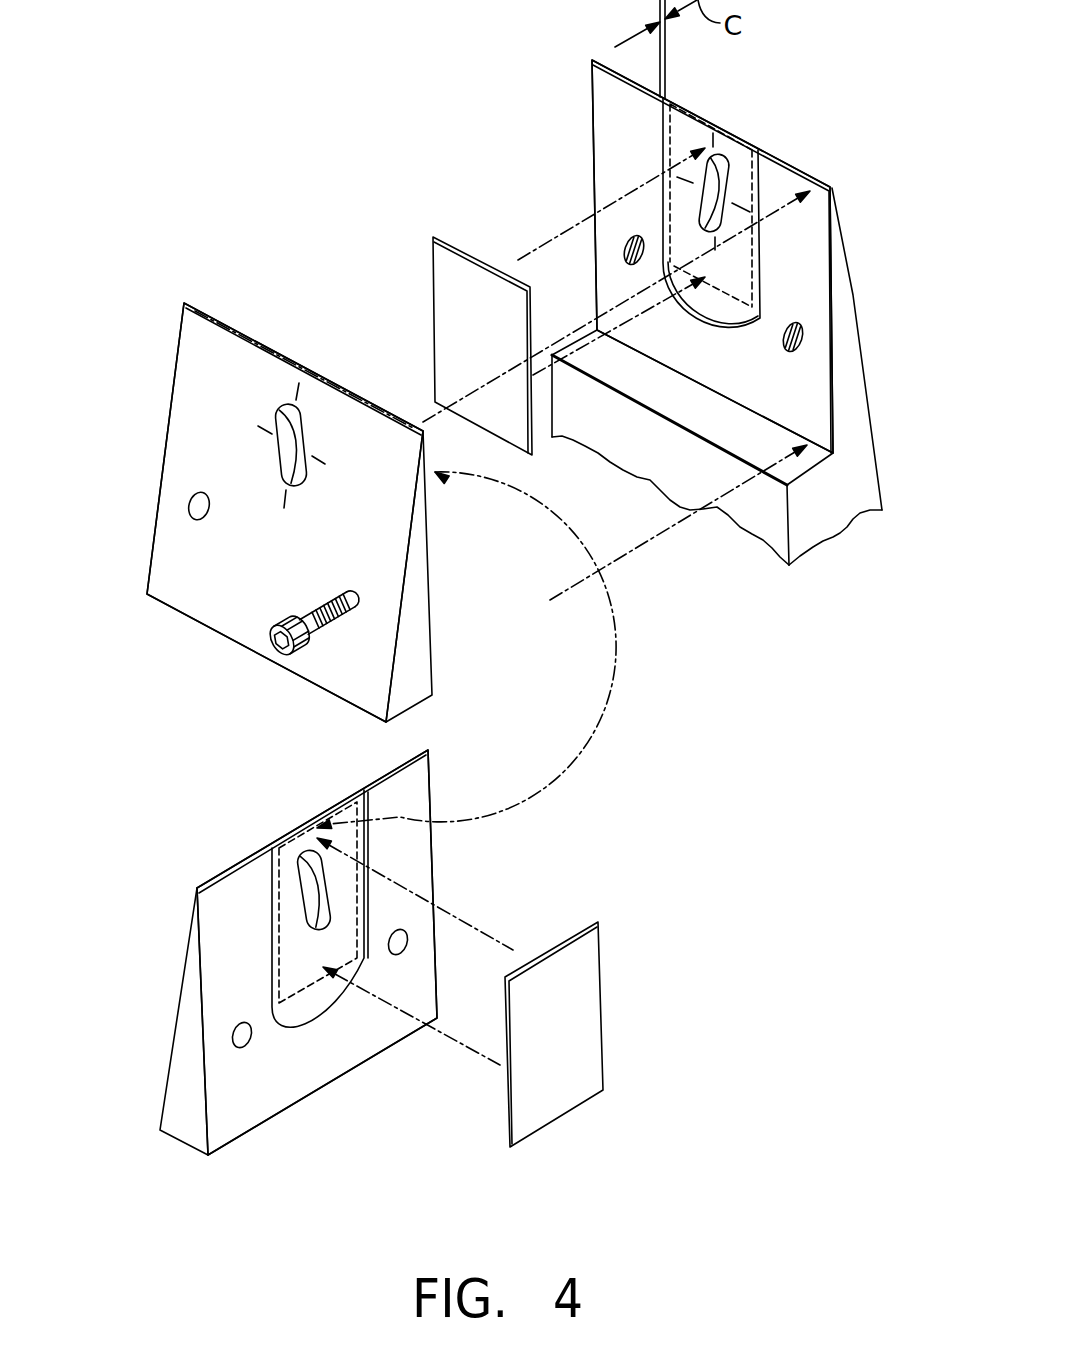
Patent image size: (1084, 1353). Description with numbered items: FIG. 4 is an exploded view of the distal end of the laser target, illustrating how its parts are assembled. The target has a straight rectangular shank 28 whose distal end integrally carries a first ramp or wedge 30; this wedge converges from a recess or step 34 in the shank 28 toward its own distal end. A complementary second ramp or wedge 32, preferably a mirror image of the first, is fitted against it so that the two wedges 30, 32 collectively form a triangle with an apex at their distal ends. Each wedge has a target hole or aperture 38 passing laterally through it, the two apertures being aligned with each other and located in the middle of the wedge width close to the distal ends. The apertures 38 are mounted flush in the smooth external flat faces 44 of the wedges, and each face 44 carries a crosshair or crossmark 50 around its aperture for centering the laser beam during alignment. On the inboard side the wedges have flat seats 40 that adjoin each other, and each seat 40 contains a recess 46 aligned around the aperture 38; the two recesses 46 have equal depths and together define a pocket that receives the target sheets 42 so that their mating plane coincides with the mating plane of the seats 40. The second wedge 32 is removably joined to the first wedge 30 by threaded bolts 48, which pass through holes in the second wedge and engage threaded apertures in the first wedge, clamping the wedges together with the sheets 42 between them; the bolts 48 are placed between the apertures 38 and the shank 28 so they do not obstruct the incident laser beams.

The shank 28 is at (825, 513).
The first ramp or wedge 30 is at (798, 170).
The second ramp or wedge 32 is at (228, 320).
The recess or step 34 is at (723, 430).
The target holes or apertures 38 is at (720, 177).
The inboard flat seats 40 is at (782, 299).
The target sheets 42 is at (432, 317).
The external flat faces 44 is at (342, 504).
The recess 46 is at (718, 268).
The threaded bolts 48 is at (308, 638).
The crosshair or crossmark 50 is at (267, 430).